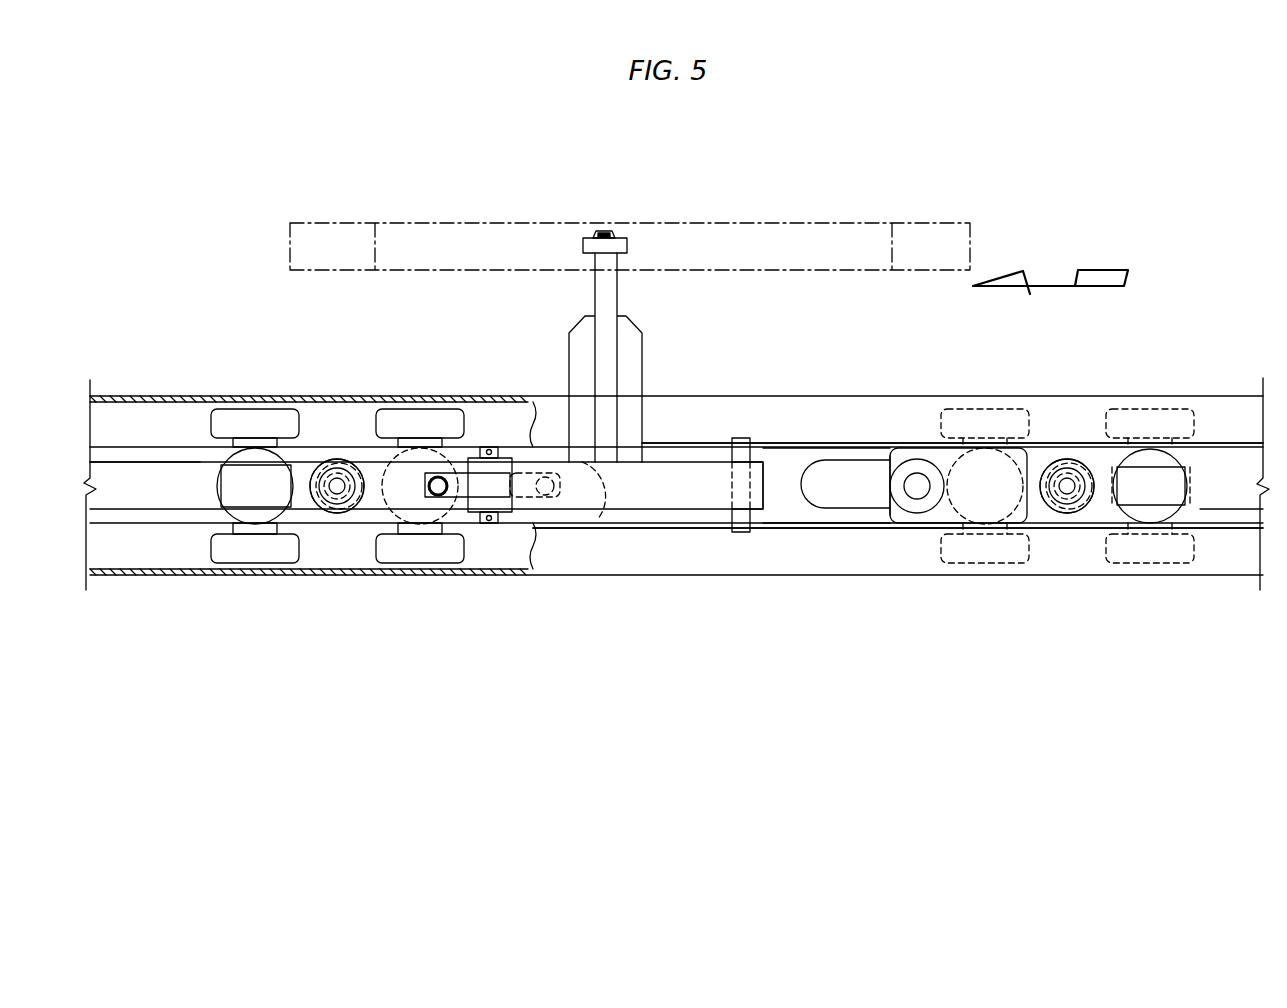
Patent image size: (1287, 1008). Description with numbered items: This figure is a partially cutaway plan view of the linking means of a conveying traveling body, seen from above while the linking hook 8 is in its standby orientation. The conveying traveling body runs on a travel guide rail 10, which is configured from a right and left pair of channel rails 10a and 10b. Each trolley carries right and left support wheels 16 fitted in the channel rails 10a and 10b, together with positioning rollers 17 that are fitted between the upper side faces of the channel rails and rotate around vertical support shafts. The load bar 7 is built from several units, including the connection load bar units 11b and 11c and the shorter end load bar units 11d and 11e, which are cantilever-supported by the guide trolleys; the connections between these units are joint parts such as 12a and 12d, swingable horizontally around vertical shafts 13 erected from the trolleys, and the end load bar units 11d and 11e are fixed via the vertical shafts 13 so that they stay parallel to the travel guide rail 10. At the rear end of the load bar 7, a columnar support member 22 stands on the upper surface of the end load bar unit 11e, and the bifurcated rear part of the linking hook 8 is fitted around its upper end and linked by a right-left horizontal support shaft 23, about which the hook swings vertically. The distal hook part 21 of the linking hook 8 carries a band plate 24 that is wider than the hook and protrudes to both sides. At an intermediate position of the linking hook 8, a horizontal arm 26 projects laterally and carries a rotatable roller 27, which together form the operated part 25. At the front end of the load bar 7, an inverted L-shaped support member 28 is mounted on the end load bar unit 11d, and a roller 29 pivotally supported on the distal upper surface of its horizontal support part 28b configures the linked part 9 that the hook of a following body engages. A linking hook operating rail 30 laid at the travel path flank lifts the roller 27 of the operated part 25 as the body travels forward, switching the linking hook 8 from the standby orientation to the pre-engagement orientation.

The load bar 7 is at (123, 462).
The linking hook 8 is at (665, 462).
The linked part 9 is at (918, 523).
The travel guide rail 10 is at (665, 576).
The channel rail 10a is at (806, 395).
The channel rail 10b is at (788, 578).
The connection load bar unit 11b is at (1227, 505).
The connection load bar unit 11c is at (128, 502).
The end load bar unit 11d is at (862, 501).
The end load bar unit 11e is at (599, 520).
The joint part 12a is at (1065, 514).
The joint part 12d is at (339, 514).
The vertical shaft 13 is at (320, 519).
The support wheel 16 is at (255, 415).
The positioning roller 17 is at (259, 455).
The distal hook part 21 is at (765, 484).
The columnar support member 22 is at (488, 483).
The horizontal support shaft 23 is at (501, 523).
The band plate 24 is at (736, 535).
The operated part 25 is at (583, 245).
The horizontal arm 26 is at (600, 288).
The roller 27 is at (620, 252).
The inverted L-shaped support member 28 is at (945, 524).
The horizontal support part 28b is at (907, 465).
The roller 29 is at (905, 462).
The linking hook operating rail 30 is at (764, 235).